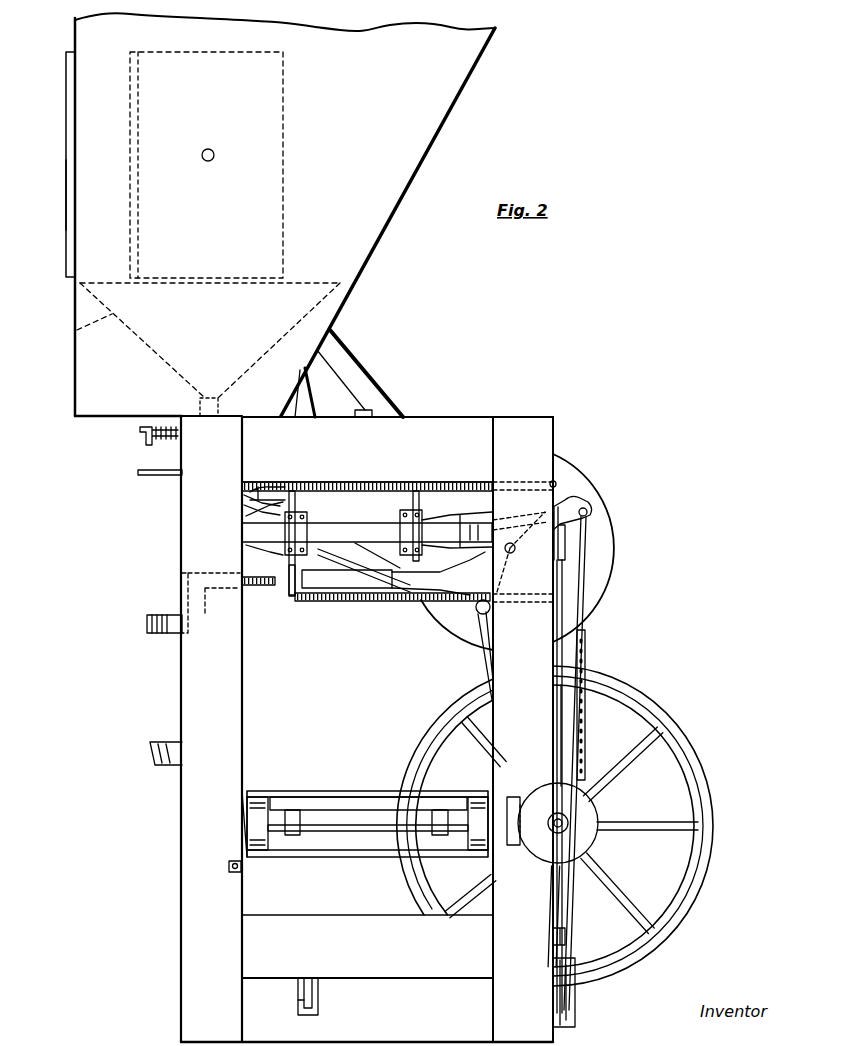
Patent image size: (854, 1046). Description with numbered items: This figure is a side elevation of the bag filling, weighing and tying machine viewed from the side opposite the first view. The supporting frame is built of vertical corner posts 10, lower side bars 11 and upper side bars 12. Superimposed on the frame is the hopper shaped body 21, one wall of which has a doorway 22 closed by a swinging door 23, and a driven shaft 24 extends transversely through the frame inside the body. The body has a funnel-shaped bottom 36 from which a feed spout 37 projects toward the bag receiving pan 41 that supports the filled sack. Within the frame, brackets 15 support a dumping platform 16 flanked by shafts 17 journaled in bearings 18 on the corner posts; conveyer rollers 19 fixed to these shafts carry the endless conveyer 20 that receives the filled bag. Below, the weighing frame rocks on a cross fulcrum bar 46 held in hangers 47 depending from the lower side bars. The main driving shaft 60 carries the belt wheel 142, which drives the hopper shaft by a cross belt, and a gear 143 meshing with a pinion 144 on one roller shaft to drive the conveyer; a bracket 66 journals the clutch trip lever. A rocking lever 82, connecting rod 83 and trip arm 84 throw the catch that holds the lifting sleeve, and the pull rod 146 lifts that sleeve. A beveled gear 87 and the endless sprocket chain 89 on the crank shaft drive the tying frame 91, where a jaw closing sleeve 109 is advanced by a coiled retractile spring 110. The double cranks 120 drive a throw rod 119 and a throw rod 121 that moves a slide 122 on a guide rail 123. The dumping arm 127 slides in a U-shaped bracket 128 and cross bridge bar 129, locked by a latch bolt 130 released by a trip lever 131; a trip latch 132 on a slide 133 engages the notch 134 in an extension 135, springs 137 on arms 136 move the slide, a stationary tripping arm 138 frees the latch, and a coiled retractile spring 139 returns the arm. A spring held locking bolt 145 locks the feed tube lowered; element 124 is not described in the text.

The vertical corner posts 10 is at (181, 533).
The lower side bars 11 is at (419, 970).
The upper side bars 12 is at (452, 417).
The brackets 15 is at (292, 835).
The dumping platform 16 is at (314, 800).
The shafts 17 is at (373, 831).
The bearings 18 is at (245, 838).
The conveyer rollers 19 is at (247, 805).
The endless conveyer 20 is at (355, 793).
The hopper shaped body 21 is at (430, 150).
The doorway 22 is at (66, 118).
The swinging door 23 is at (74, 194).
The driven shaft 24 is at (215, 155).
The funnel-shaped bottom 36 is at (77, 330).
The feed spout 37 is at (200, 402).
The bag receiving pan 41 is at (150, 755).
The cross fulcrum bar 46 is at (312, 997).
The hangers 47 is at (298, 1001).
The main driving shaft 60 is at (556, 832).
The bracket 66 is at (514, 553).
The rocking lever 82 is at (580, 985).
The connecting rod 83 is at (572, 912).
The trip arm 84 is at (565, 540).
The beveled gear 87 is at (575, 478).
The endless sprocket chain 89 is at (590, 714).
The frame 91 is at (476, 553).
The jaw closing sleeve 109 is at (277, 482).
The coiled retractile spring 110 is at (321, 482).
The throw rod 119 is at (476, 640).
The double cranks 120 is at (492, 608).
The throw rod 121 is at (488, 518).
The slide 122 is at (405, 482).
The guide rail 123 is at (476, 482).
The bar 124 is at (140, 477).
The dumping arm 127 is at (147, 626).
The U-shaped bracket 128 is at (432, 600).
The cross bridge bar 129 is at (365, 410).
The latch bolt 130 is at (433, 563).
The trip lever 131 is at (447, 482).
The trip latch 132 is at (320, 592).
The slide 133 is at (250, 533).
The notch 134 is at (345, 602).
The extension 135 is at (372, 601).
The arms 136 is at (296, 480).
The coiled retractile springs 137 is at (354, 482).
The stationary tripping arm 138 is at (246, 496).
The coiled retractile spring 139 is at (266, 585).
The belt wheel 142 is at (680, 783).
The gear 143 is at (590, 808).
The pinion 144 is at (514, 797).
The spring held locking bolt 145 is at (140, 437).
The pull rod 146 is at (580, 568).